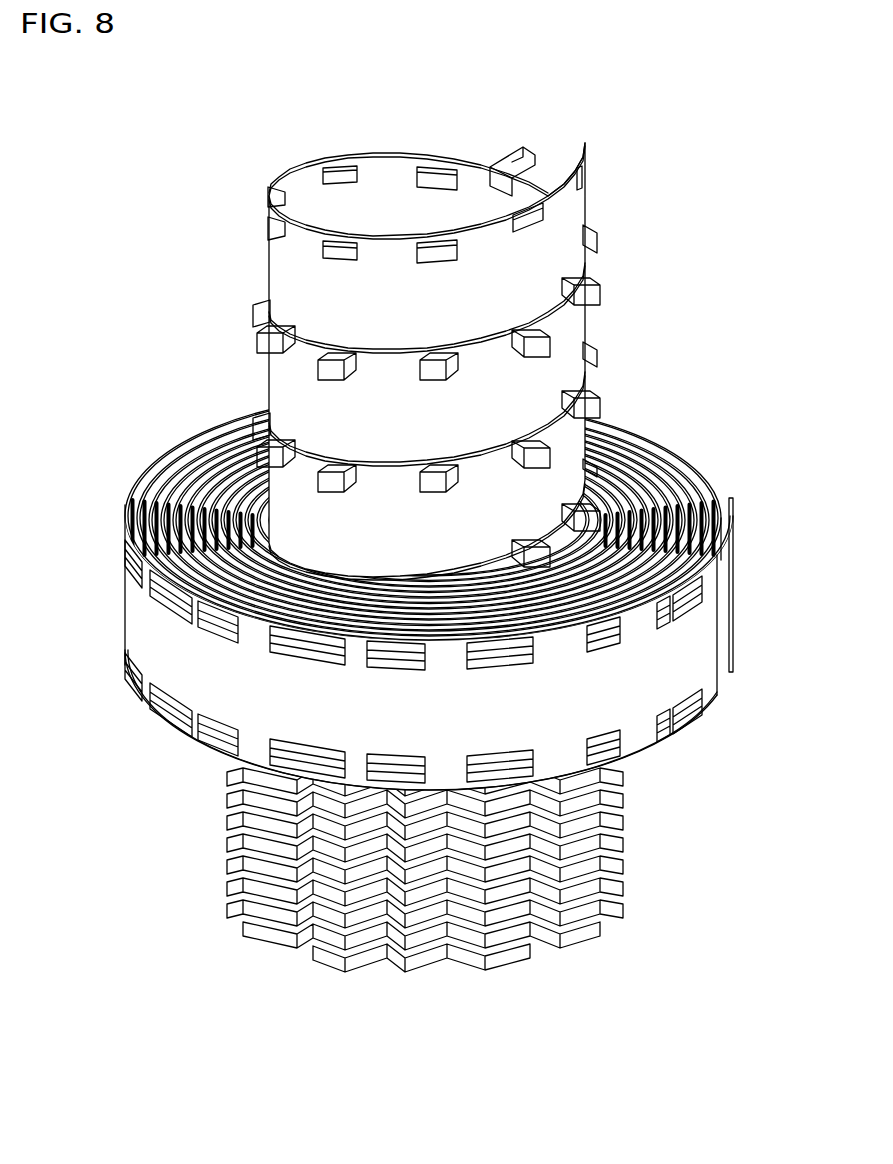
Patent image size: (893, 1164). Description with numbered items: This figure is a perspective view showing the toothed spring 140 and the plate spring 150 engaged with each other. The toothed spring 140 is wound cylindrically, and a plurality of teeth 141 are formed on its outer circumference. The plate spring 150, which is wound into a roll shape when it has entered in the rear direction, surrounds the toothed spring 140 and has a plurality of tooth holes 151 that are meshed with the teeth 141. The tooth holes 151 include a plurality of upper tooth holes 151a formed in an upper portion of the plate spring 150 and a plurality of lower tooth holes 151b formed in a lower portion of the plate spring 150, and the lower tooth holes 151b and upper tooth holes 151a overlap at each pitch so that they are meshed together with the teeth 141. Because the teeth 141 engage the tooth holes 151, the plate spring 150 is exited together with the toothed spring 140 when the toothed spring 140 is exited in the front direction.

The toothed spring 140 is at (480, 530).
The teeth 141 is at (503, 153).
The plate spring 150 is at (429, 516).
The tooth holes 151 is at (385, 549).
The upper tooth holes 151a is at (127, 560).
The lower tooth holes 151b is at (127, 672).